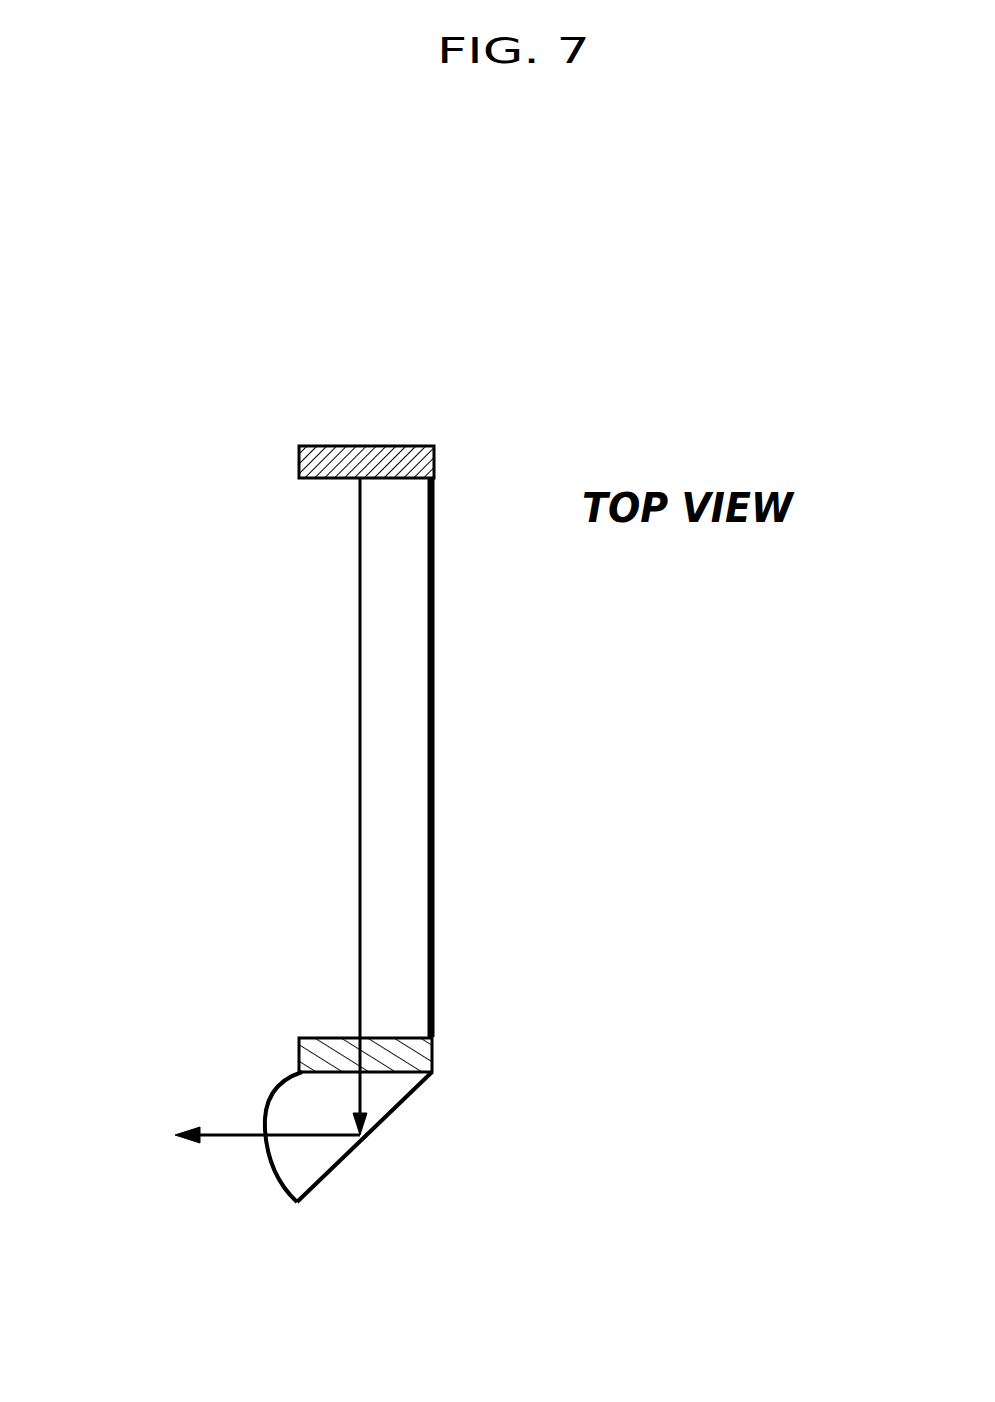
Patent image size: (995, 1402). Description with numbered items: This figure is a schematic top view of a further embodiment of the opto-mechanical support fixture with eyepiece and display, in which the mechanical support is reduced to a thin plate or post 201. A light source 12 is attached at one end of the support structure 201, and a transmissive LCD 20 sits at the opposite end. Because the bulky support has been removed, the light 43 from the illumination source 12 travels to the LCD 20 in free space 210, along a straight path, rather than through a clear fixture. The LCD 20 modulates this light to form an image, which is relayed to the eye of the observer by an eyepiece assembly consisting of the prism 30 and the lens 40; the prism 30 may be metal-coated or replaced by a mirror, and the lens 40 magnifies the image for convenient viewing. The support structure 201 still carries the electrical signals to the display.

The light source 12 is at (372, 440).
The free space 210 is at (323, 657).
The thin plate or post 201 is at (440, 732).
The ray 43 is at (355, 855).
The transmissive LCD 20 is at (420, 1055).
The prism 30 is at (387, 1118).
The lens 40 is at (267, 1160).